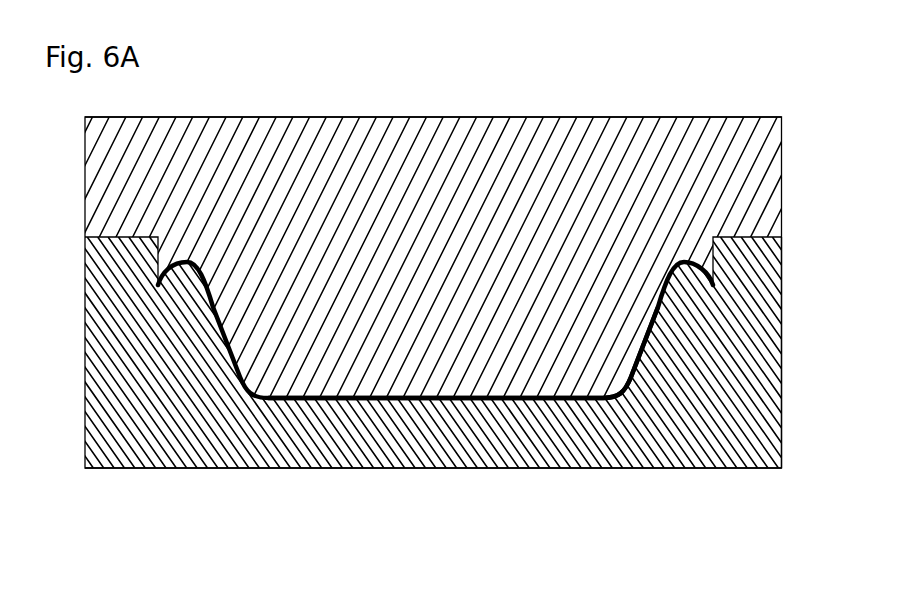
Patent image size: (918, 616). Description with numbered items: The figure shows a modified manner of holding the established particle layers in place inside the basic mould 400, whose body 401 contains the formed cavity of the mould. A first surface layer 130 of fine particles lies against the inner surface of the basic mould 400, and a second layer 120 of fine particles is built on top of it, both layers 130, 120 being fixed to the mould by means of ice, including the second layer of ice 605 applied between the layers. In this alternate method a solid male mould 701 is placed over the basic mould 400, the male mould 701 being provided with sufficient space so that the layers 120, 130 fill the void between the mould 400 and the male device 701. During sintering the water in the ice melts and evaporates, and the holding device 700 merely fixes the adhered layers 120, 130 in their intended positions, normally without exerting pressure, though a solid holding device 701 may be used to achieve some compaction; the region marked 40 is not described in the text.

The holding device 700 is at (563, 97).
The male mould 701 is at (266, 130).
The basic mould 400 is at (67, 527).
The body 401 is at (718, 442).
The lower die cavity 40 is at (313, 442).
The layer of ice 605 is at (487, 377).
The second layer 120 is at (533, 392).
The surface layer 130 is at (400, 405).